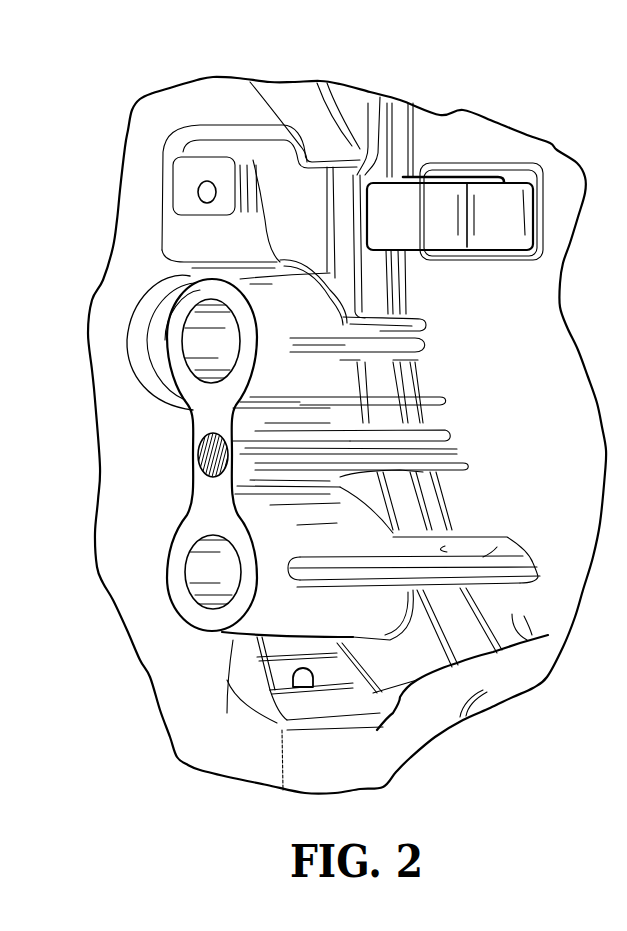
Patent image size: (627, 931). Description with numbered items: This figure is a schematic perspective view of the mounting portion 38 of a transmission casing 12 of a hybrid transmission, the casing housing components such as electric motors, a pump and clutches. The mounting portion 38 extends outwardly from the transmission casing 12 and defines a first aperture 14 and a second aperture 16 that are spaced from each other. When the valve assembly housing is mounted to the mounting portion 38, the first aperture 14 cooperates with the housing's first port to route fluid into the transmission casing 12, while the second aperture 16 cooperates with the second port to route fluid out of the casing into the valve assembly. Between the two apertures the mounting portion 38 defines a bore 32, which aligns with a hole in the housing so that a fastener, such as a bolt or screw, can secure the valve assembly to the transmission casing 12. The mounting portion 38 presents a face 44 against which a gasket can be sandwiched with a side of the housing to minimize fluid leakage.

The transmission casing 12 is at (297, 100).
The first aperture 14 is at (205, 318).
The second aperture 16 is at (193, 578).
The bore 32 is at (202, 450).
The mounting portion 38 is at (270, 623).
The face 44 is at (183, 530).